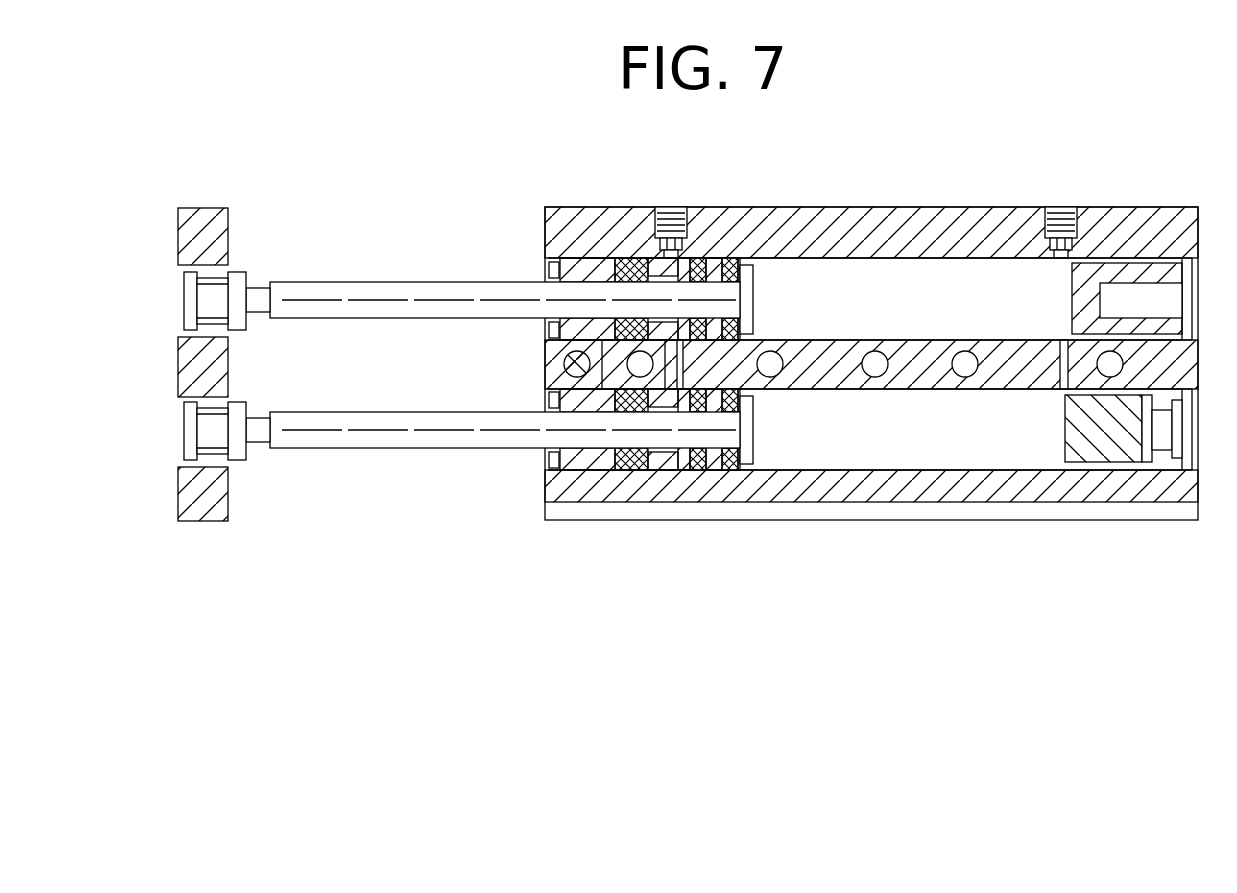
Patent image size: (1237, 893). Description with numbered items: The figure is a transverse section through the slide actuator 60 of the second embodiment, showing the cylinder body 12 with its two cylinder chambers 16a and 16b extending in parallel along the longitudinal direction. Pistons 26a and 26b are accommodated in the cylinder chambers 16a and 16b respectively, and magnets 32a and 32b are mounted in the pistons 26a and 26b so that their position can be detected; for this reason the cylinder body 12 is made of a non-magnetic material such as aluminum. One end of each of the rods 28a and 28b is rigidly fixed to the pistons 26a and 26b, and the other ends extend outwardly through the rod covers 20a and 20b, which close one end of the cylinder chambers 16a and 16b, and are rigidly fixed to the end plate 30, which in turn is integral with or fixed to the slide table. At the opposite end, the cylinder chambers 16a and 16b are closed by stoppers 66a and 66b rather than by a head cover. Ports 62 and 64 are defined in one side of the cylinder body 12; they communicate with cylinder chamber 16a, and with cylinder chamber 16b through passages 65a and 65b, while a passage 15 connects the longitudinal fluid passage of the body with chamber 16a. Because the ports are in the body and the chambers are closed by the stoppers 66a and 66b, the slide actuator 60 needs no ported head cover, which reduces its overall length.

The cylinder body 12 is at (1124, 522).
The passage 15 is at (648, 258).
The cylinder chamber 16a is at (892, 280).
The cylinder chamber 16b is at (920, 455).
The rod cover 20a is at (603, 258).
The rod cover 20b is at (612, 470).
The piston 26a is at (783, 258).
The piston 26b is at (742, 462).
The rod 28a is at (378, 296).
The rod 28b is at (375, 425).
The end plate 30 is at (208, 372).
The magnet 32a is at (729, 258).
The magnet 32b is at (720, 470).
The slide actuator 60 is at (418, 174).
The port 62 is at (676, 207).
The port 64 is at (1062, 207).
The passage 65a is at (690, 364).
The passage 65b is at (1061, 376).
The stopper 66a is at (1095, 303).
The stopper 66b is at (1128, 435).